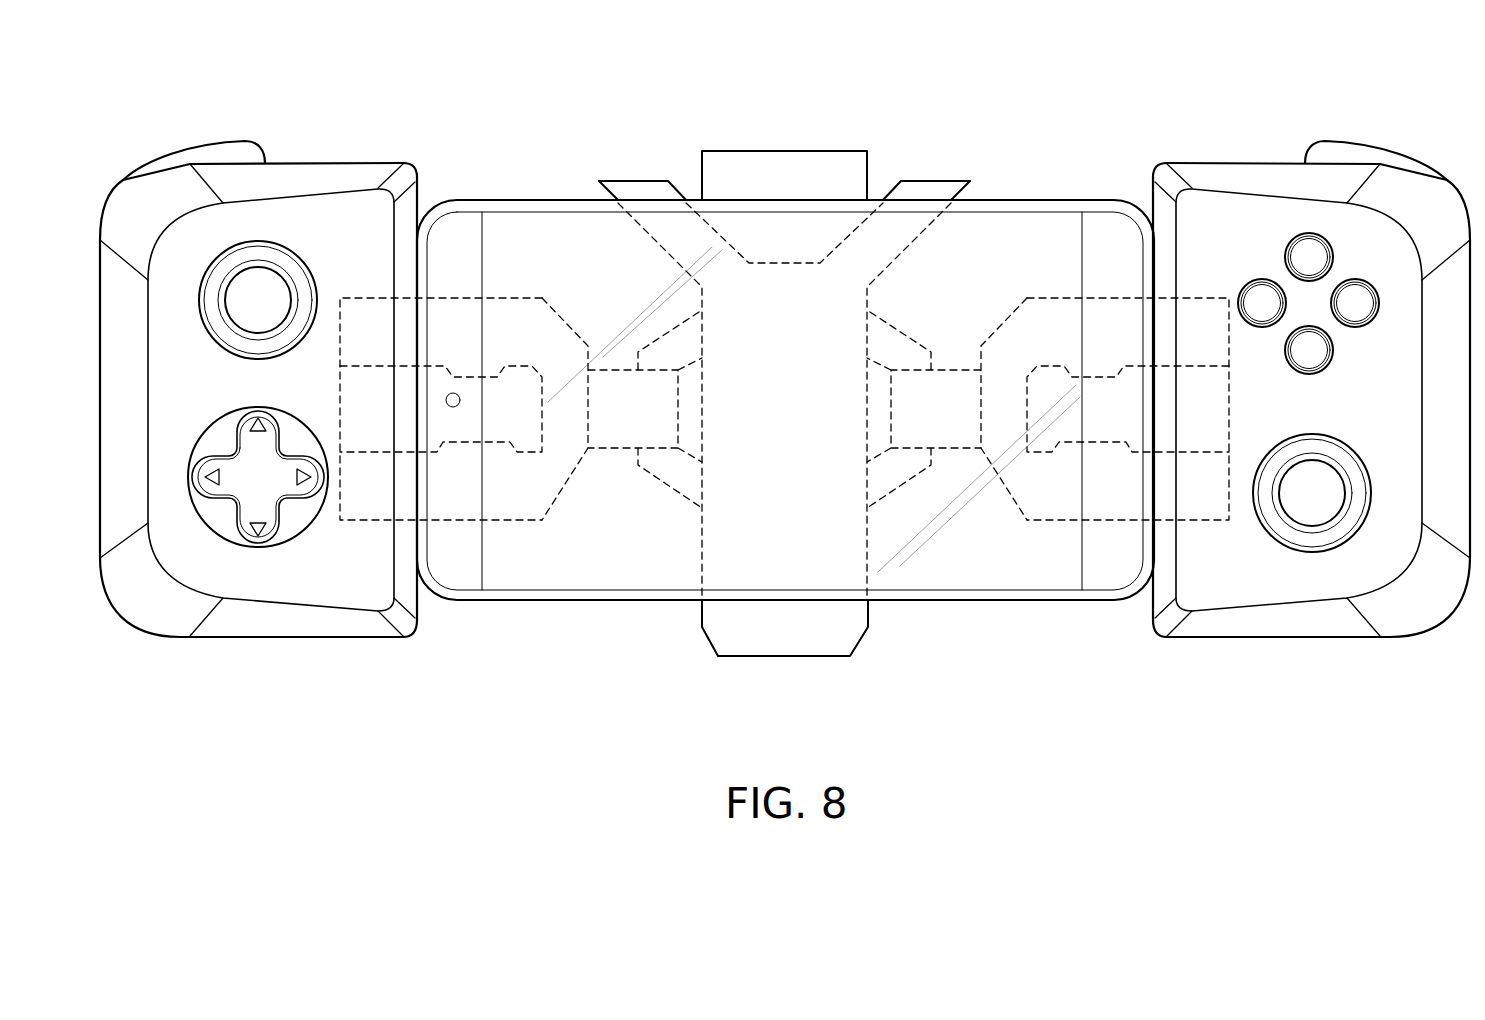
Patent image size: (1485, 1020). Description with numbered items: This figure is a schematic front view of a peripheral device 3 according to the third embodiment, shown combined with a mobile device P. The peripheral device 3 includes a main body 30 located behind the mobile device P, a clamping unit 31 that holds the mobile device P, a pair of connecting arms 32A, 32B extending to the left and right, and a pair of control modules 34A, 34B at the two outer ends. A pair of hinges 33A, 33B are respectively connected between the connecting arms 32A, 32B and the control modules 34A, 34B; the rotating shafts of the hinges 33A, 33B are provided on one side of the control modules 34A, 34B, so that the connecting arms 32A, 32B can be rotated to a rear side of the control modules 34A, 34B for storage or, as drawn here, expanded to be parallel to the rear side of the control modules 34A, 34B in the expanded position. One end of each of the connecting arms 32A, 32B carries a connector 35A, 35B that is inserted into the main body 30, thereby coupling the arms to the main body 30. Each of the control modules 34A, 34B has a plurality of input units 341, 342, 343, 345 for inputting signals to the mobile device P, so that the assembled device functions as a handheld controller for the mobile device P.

The peripheral device 3 is at (1441, 130).
The mobile device P is at (1045, 194).
The main body 30 is at (668, 488).
The clamping unit 31 is at (789, 170).
The connecting arm 32A is at (1040, 507).
The connecting arm 32B is at (518, 507).
The hinge 33A is at (1205, 507).
The hinge 33B is at (362, 507).
The control module 34A is at (1240, 155).
The control module 34B is at (345, 155).
The connector 35A is at (957, 378).
The connector 35B is at (612, 430).
The input unit 341 is at (298, 271).
The input unit 342 is at (237, 441).
The input unit 343 is at (1260, 300).
The input unit 345 is at (247, 152).